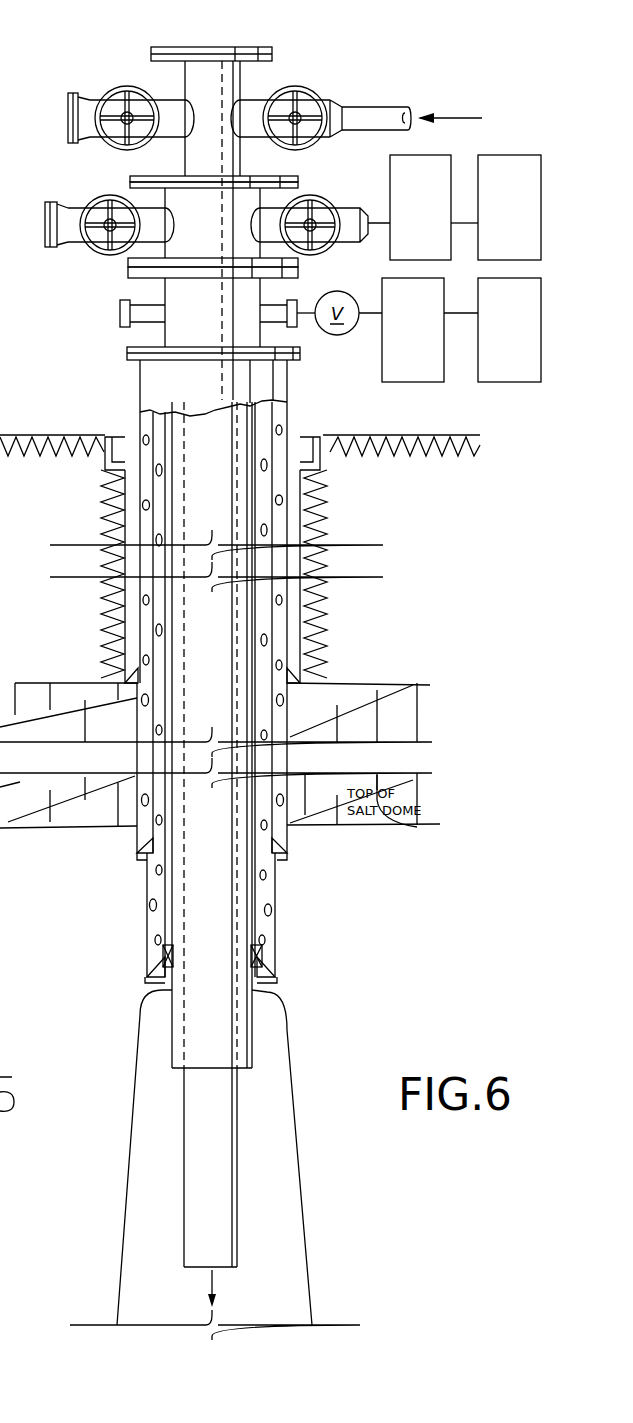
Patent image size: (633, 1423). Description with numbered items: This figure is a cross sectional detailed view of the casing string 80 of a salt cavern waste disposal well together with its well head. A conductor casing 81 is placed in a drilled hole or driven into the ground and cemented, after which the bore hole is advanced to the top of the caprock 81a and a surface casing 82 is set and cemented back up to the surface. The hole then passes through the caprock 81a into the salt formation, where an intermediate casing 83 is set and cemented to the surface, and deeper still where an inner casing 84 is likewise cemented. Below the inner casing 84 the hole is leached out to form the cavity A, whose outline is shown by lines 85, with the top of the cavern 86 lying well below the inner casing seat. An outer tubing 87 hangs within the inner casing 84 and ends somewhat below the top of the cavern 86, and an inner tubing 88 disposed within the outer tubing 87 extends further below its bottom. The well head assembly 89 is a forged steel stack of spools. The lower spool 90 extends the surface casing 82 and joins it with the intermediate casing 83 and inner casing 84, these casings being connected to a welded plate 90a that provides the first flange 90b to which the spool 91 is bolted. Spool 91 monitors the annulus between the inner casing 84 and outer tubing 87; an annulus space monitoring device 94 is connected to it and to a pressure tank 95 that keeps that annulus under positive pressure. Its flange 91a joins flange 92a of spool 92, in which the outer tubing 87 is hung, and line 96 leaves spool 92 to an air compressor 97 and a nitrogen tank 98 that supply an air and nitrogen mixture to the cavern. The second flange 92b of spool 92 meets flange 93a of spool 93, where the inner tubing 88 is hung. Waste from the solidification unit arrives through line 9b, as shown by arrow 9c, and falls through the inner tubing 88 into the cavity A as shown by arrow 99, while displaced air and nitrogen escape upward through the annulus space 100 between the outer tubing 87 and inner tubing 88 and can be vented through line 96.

The well head assembly 89 is at (221, 42).
The spool 93 is at (185, 85).
The flange 93a is at (150, 180).
The second flange 92b is at (130, 183).
The spool 92 is at (253, 202).
The line 96 is at (345, 212).
The flange 92a is at (130, 262).
The flange 91a is at (130, 280).
The spool 91 is at (165, 328).
The first flange 90b is at (300, 354).
The welded plate 90a is at (280, 363).
The lower spool 90 is at (160, 385).
The line 9b is at (369, 113).
The arrow 9c is at (466, 117).
The air compressor 97 is at (406, 222).
The nitrogen tank 98 is at (494, 222).
The annulus space monitoring device 94 is at (398, 346).
The pressure tank 95 is at (494, 346).
The casing string 80 is at (95, 525).
The conductor casing 81 is at (103, 458).
The caprock 81a is at (50, 683).
The surface casing 82 is at (135, 620).
The intermediate casing 83 is at (135, 797).
The inner casing 84 is at (263, 923).
The annulus space 100 is at (180, 899).
The outer tubing 87 is at (252, 1064).
The inner tubing 88 is at (227, 1157).
The top of the cavern 86 is at (160, 993).
The lines 85 is at (128, 1213).
The cavity A is at (168, 1160).
The arrow 99 is at (214, 1280).